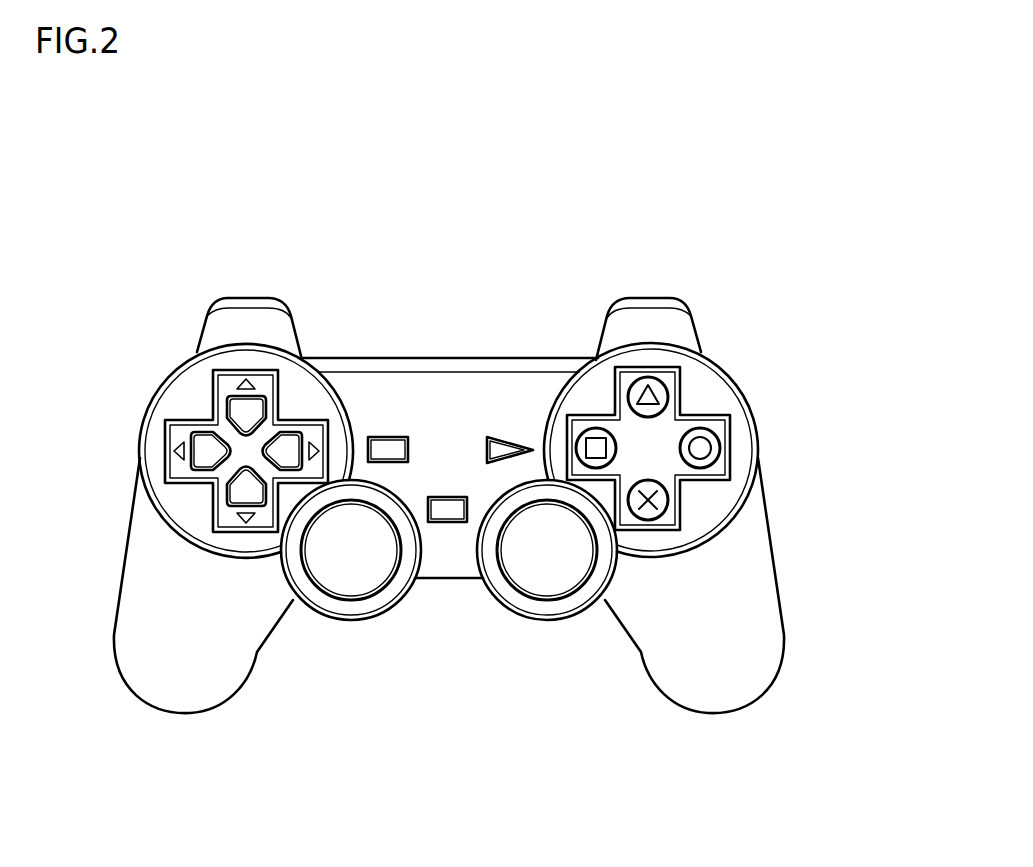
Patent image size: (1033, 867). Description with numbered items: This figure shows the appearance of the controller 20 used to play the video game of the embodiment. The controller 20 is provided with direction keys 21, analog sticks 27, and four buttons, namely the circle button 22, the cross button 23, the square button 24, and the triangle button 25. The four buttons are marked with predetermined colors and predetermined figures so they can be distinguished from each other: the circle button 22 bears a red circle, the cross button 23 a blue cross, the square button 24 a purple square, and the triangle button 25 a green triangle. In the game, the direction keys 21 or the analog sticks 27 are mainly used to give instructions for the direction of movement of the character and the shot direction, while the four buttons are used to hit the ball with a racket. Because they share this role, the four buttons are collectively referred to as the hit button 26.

The controller 20 is at (821, 206).
The direction keys 21 is at (183, 428).
The circle button 22 is at (710, 435).
The cross button 23 is at (662, 500).
The square button 24 is at (608, 449).
The triangle button 25 is at (656, 392).
The hit button 26 is at (856, 337).
The analog sticks 27 is at (362, 575).